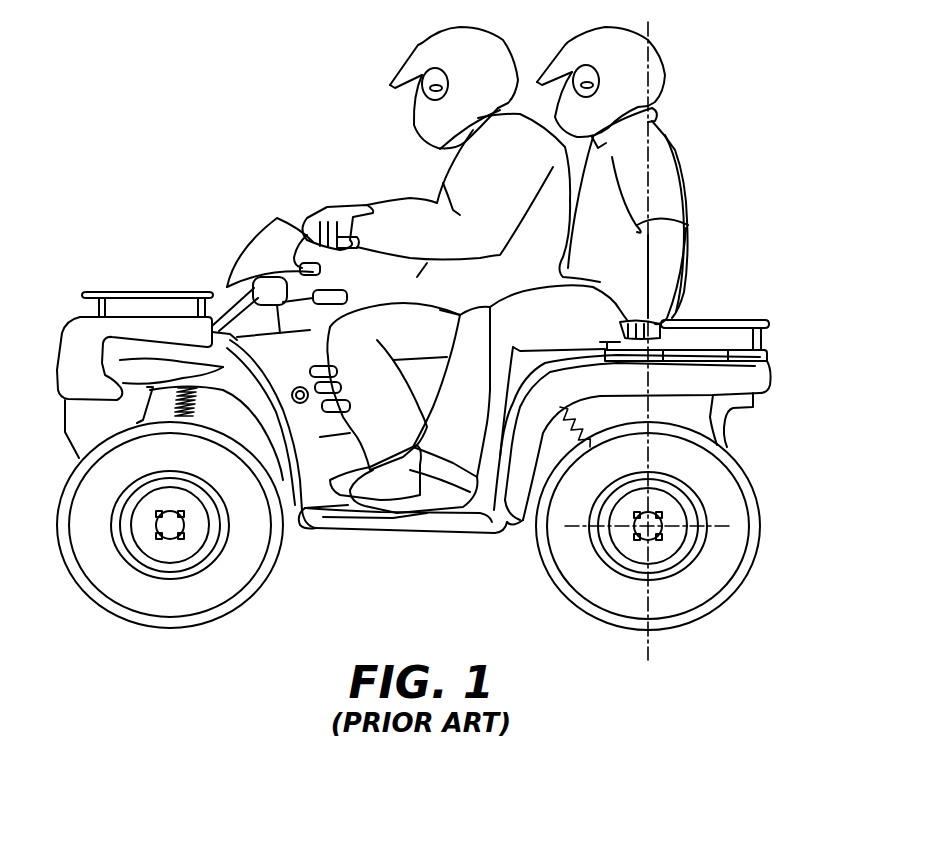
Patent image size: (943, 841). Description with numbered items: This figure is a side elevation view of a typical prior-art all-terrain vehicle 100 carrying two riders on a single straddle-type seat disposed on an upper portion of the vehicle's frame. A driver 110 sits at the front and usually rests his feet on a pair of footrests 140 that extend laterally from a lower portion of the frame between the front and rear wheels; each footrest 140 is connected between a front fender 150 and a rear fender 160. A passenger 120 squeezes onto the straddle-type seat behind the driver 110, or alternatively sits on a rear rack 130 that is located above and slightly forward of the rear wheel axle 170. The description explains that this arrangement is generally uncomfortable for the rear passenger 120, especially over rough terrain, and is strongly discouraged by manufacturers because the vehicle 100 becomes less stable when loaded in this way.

The all-terrain vehicle (ATV) 100 is at (125, 218).
The driver 110 is at (442, 186).
The passenger 120 is at (685, 172).
The rear rack 130 is at (770, 323).
The footrests 140 is at (388, 525).
The front fender 150 is at (301, 530).
The rear fender 160 is at (511, 513).
The rear wheel axle 170 is at (668, 533).